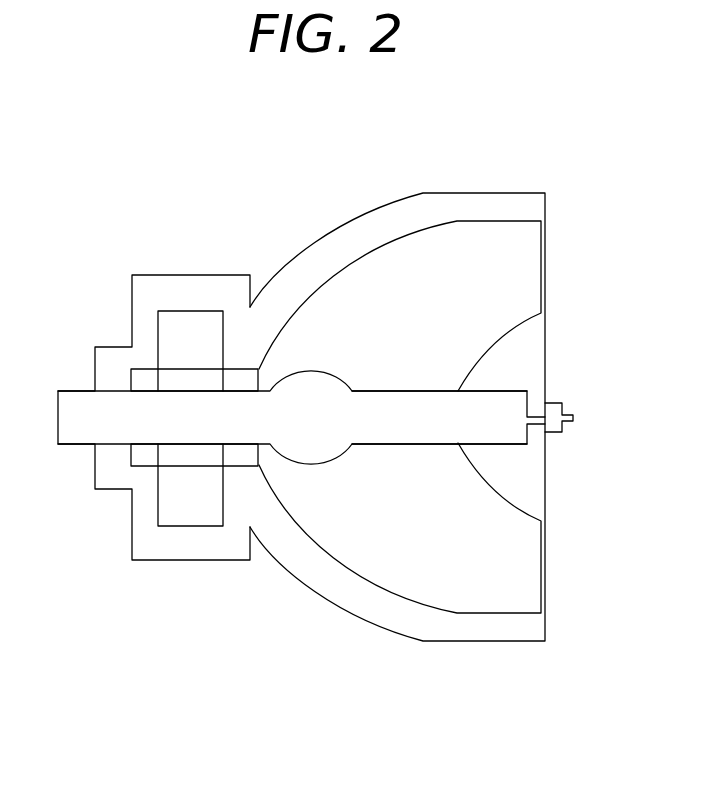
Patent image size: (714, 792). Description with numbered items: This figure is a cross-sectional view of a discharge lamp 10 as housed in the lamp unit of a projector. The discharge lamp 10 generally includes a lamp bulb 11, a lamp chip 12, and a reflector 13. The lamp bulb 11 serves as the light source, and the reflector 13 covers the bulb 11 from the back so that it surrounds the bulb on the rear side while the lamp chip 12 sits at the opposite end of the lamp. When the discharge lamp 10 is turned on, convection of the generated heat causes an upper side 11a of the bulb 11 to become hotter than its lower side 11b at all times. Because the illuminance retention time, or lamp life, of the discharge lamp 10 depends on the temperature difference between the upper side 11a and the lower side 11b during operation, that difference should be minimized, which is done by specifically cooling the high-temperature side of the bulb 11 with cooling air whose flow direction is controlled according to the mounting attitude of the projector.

The discharge lamp 10 is at (164, 167).
The lamp bulb 11 is at (295, 391).
The upper side of the bulb 11a is at (379, 377).
The lower side of the bulb 11b is at (378, 457).
The lamp chip 12 is at (553, 403).
The reflector 13 is at (297, 551).